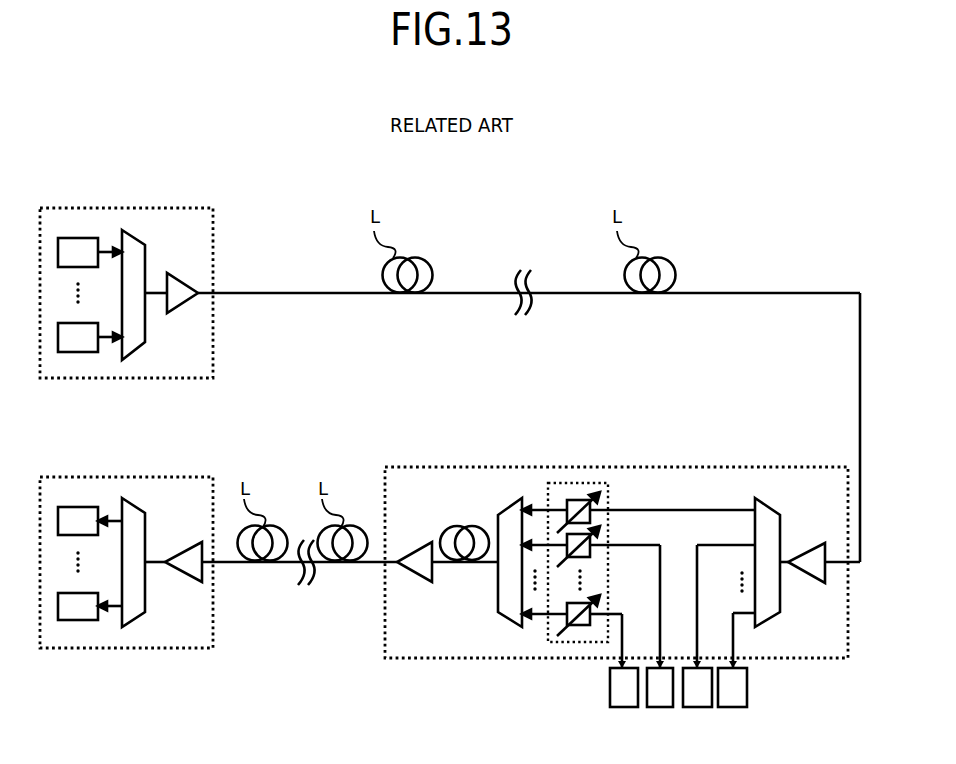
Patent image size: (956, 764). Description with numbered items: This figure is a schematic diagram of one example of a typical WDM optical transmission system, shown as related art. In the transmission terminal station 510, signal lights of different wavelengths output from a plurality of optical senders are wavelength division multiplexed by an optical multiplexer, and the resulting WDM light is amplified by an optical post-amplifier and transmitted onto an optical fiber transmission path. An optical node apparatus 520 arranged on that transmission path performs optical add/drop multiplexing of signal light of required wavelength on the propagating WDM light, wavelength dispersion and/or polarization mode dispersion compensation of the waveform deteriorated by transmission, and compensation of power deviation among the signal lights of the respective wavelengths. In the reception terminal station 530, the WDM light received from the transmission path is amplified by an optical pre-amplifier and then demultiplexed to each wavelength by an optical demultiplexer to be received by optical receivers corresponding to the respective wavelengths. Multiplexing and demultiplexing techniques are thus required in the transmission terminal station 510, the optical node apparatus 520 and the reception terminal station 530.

The transmission terminal station 510 is at (124, 257).
The optical node apparatus 520 is at (622, 562).
The reception terminal station 530 is at (124, 524).